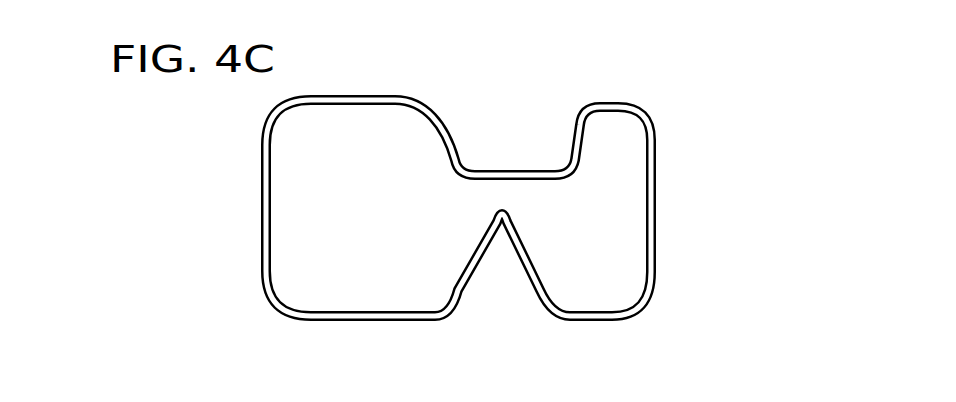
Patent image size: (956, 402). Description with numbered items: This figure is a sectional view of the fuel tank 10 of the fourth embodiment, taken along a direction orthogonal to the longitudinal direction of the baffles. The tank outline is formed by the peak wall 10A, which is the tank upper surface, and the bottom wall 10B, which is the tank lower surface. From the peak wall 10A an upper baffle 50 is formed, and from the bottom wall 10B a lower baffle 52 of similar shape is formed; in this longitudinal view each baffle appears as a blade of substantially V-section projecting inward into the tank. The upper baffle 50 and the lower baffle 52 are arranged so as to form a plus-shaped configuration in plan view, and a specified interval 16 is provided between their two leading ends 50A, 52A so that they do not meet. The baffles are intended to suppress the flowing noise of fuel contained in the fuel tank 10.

The fuel tank 10 is at (557, 98).
The peak wall 10A is at (362, 97).
The bottom wall 10B is at (401, 322).
The upper baffle 50 is at (424, 134).
The leading end of upper baffle 50A is at (463, 180).
The lower baffle 52 is at (470, 268).
The leading end of lower baffle 52A is at (503, 205).
The specified interval 16 is at (512, 197).